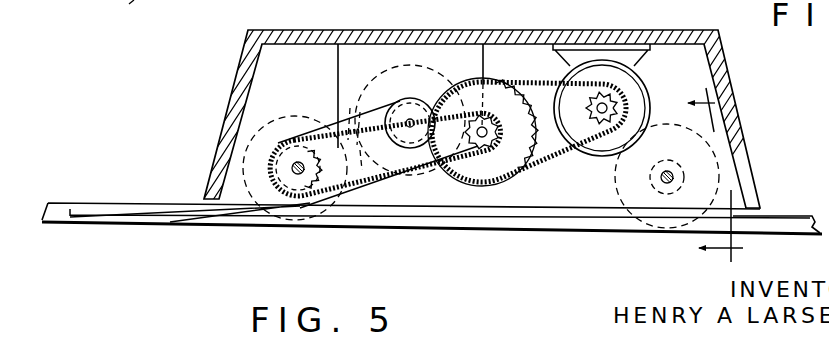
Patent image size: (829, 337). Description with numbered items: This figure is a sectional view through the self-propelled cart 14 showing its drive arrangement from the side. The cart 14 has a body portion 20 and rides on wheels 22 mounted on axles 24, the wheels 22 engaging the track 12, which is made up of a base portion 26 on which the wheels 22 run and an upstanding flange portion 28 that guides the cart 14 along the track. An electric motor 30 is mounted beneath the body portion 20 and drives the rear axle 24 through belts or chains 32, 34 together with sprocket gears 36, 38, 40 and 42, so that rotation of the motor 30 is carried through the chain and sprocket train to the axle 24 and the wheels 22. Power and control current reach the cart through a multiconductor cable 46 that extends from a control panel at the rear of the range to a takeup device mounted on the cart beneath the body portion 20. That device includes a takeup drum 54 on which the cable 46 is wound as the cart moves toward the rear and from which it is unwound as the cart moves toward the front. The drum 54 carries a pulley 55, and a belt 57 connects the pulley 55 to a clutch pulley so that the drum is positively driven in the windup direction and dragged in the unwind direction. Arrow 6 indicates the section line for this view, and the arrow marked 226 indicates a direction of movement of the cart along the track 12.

The direction of conveyor travel 6 is at (707, 228).
The track 12 is at (93, 199).
The cart 14 is at (117, 9).
The body portion 20 is at (233, 105).
The wheel 22 is at (272, 122).
The axle 24 is at (292, 168).
The base portion 26 is at (528, 230).
The flange portion 28 is at (793, 217).
The electric motor 30 is at (607, 70).
The belt or chain 32 is at (545, 81).
The belt or chain 34 is at (340, 123).
The sprocket gear 36 is at (605, 118).
The sprocket gear 38 is at (533, 157).
The sprocket gear 40 is at (492, 140).
The sprocket gear 42 is at (302, 188).
The multiconductor cable 46 is at (138, 218).
The takeup drum 54 is at (440, 77).
The pulley 55 is at (424, 87).
The belt 57 is at (364, 103).
The direction of movement 226 is at (684, 103).